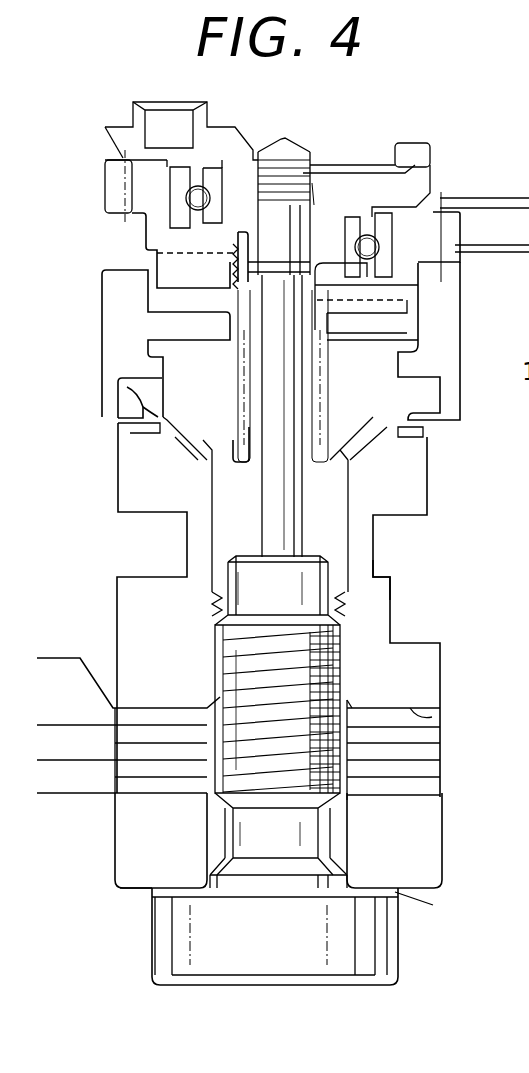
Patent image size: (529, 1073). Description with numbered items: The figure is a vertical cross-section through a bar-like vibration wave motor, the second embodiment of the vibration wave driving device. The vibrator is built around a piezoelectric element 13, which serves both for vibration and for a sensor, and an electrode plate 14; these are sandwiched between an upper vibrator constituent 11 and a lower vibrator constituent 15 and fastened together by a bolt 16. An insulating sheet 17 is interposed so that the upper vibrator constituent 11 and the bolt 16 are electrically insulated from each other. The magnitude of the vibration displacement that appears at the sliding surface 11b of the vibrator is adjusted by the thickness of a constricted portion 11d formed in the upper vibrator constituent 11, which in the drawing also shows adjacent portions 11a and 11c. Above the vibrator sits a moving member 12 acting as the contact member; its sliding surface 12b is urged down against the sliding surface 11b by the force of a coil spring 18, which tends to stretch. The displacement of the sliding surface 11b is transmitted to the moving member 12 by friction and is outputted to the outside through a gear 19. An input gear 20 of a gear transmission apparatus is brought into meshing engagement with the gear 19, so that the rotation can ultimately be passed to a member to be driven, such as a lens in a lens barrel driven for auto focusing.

The upper vibrator constituent 11 is at (413, 483).
The lip of body 11a is at (118, 426).
The sliding surface 11b is at (117, 412).
The chamfer of body 11c is at (438, 717).
The constricted portion 11d is at (376, 547).
The moving member 12 is at (448, 319).
The sliding surface 12b is at (118, 382).
The piezoelectric element 13 is at (430, 786).
The electrode plate 14 is at (55, 658).
The lower vibrator constituent 15 is at (428, 857).
The bolt 16 is at (390, 948).
The insulating sheet 17 is at (150, 890).
The coil spring 18 is at (222, 442).
The gear 19 is at (105, 184).
The input gear 20 is at (496, 198).